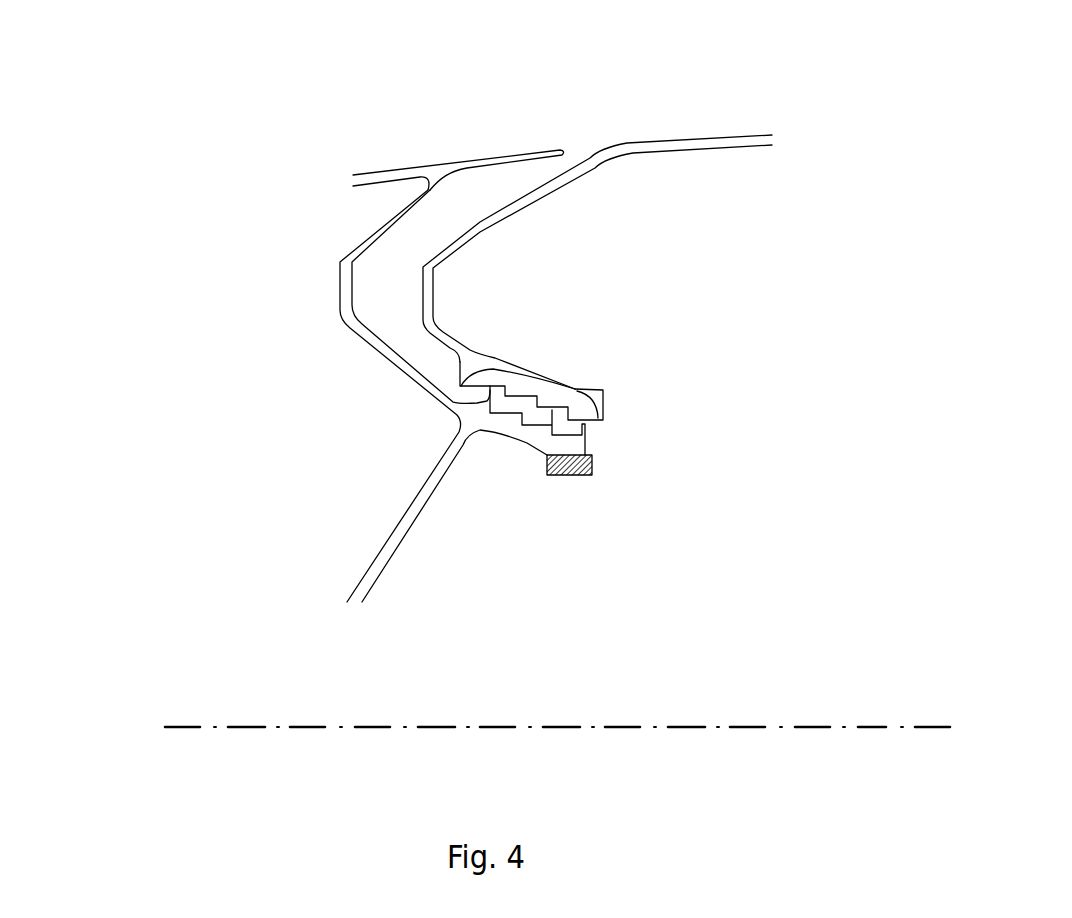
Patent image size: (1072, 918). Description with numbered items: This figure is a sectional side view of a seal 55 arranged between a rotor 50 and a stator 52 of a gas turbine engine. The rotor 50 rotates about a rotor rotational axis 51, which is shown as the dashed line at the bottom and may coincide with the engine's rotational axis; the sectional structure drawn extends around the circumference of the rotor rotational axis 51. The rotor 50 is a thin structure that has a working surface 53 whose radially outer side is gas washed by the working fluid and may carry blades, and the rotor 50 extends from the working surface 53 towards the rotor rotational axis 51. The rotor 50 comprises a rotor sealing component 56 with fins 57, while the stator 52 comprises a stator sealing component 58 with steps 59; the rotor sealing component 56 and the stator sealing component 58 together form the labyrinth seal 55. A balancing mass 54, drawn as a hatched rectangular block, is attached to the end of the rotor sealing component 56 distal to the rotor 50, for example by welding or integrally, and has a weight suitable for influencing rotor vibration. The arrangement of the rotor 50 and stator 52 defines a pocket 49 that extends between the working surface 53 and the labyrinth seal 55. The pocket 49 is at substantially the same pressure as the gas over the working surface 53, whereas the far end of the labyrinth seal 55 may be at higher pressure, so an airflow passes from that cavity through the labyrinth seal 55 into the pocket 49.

The pocket 49 is at (387, 283).
The rotor 50 is at (363, 330).
The rotor rotational axis 51 is at (903, 727).
The stator 52 is at (522, 213).
The working surface 53 is at (407, 163).
The balancing mass 54 is at (568, 475).
The labyrinth seal 55 is at (628, 428).
The rotor sealing component 56 is at (527, 435).
The fins 57 is at (552, 410).
The stator sealing component 58 is at (485, 349).
The steps 59 is at (542, 398).